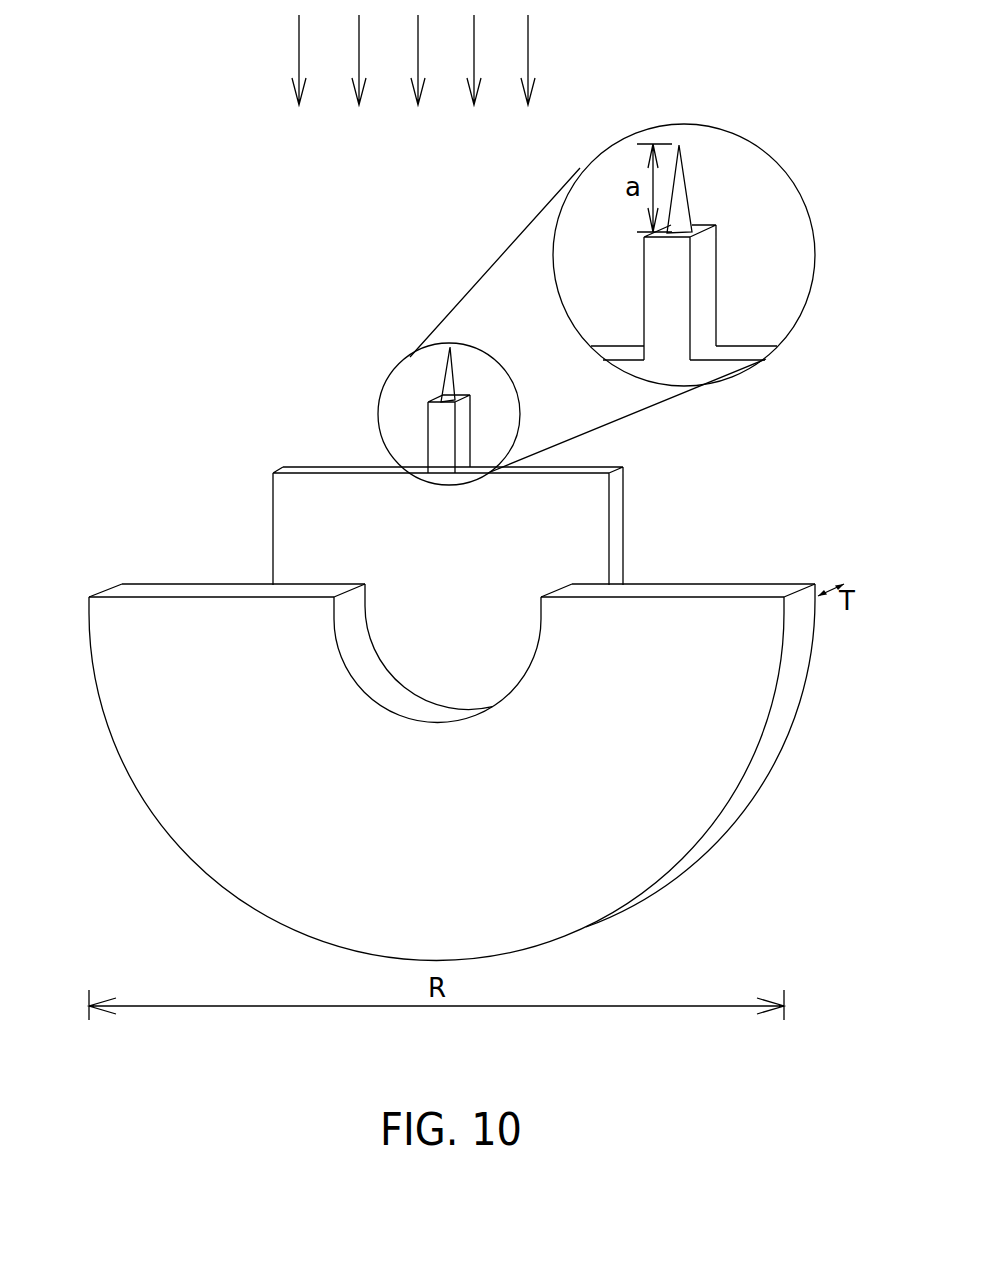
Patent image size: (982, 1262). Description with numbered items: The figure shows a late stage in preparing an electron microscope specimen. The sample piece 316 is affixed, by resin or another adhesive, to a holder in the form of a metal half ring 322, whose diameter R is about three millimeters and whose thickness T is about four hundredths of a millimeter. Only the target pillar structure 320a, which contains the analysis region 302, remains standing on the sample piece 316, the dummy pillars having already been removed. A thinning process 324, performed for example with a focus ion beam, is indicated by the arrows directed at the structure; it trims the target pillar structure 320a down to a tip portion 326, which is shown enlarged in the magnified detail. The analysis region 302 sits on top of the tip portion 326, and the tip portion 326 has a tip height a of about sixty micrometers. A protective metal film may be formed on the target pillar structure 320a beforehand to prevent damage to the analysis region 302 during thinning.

The analysis region 302 is at (645, 230).
The sample piece 316 is at (469, 509).
The target pillar structure 320a is at (435, 433).
The metal half ring 322 is at (555, 907).
The thinning process 324 is at (298, 54).
The tip portion 326 is at (683, 198).